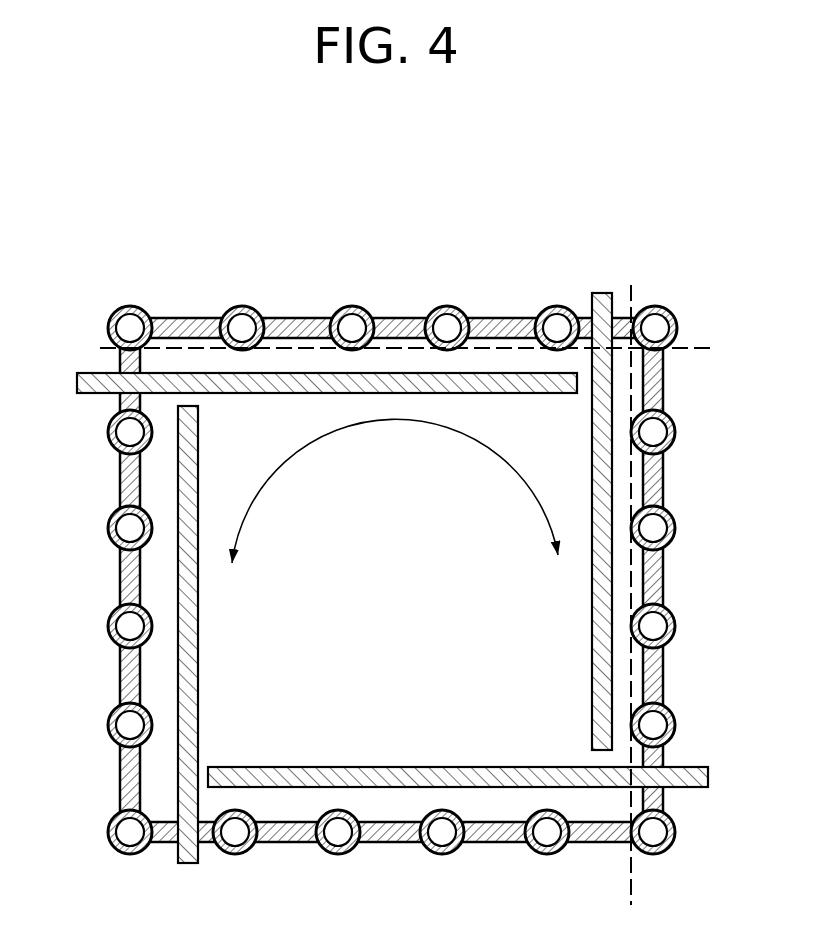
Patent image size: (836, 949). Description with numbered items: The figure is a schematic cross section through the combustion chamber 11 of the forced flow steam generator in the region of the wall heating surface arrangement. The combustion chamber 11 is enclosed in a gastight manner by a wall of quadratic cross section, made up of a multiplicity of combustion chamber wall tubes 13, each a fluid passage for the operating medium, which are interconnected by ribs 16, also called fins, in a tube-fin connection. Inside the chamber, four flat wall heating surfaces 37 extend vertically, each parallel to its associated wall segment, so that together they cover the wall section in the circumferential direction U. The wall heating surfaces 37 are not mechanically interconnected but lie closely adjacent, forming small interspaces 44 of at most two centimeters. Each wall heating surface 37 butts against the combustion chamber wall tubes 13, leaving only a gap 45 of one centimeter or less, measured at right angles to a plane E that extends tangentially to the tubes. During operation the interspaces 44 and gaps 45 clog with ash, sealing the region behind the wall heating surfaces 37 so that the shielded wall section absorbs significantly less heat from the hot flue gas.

The combustion chamber 11 is at (428, 600).
The combustion chamber wall tubes 13 is at (445, 306).
The ribs 16 is at (186, 317).
The wall heating surfaces 37 is at (298, 373).
The interspaces 44 is at (198, 406).
The gap 45 is at (480, 405).
The plane E is at (632, 300).
The circumferential direction U is at (358, 428).